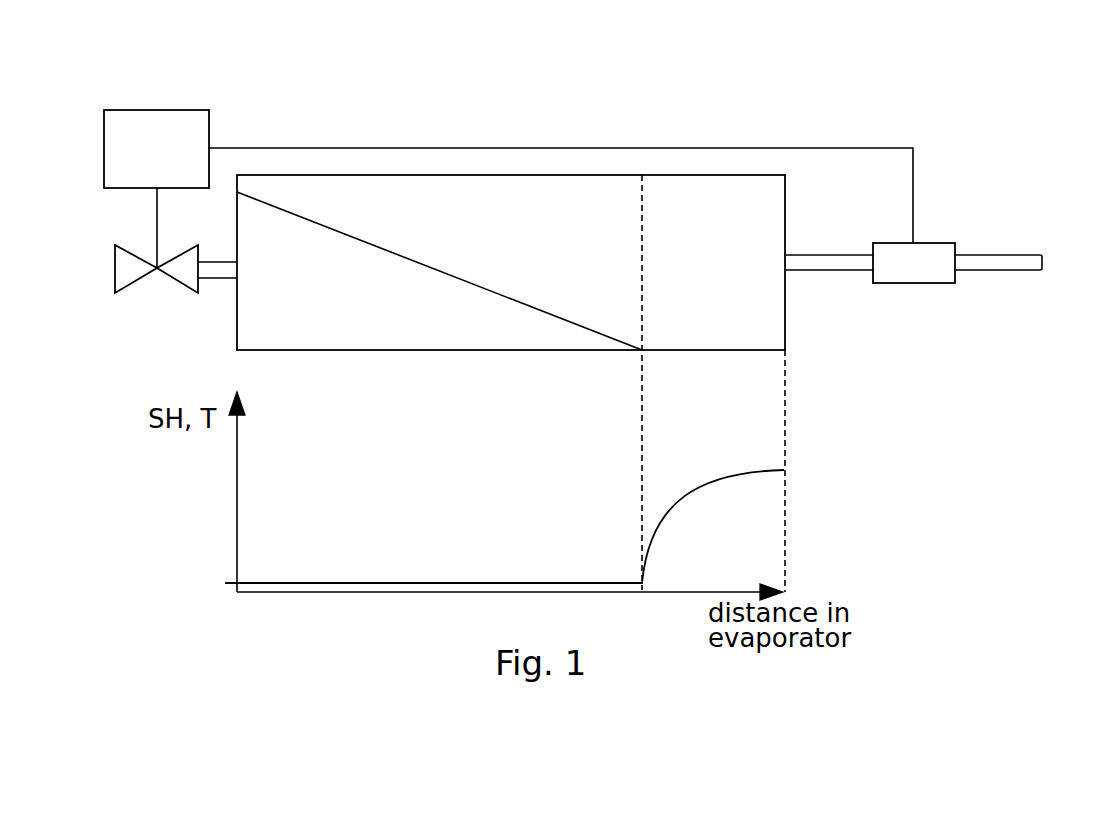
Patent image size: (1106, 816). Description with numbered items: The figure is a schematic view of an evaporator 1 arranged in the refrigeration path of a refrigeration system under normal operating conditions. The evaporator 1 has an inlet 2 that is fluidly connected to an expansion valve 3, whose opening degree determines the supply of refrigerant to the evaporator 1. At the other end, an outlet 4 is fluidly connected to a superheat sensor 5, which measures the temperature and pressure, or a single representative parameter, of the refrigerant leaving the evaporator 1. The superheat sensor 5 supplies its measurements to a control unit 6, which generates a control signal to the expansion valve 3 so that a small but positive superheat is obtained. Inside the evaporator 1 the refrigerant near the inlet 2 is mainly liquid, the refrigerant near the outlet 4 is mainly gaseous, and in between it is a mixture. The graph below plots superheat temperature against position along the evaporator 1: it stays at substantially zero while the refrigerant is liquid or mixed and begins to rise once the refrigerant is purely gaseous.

The evaporator 1 is at (585, 163).
The inlet 2 is at (233, 285).
The expansion valve 3 is at (127, 275).
The outlet 4 is at (790, 275).
The superheat sensor 5 is at (918, 265).
The control unit 6 is at (165, 118).